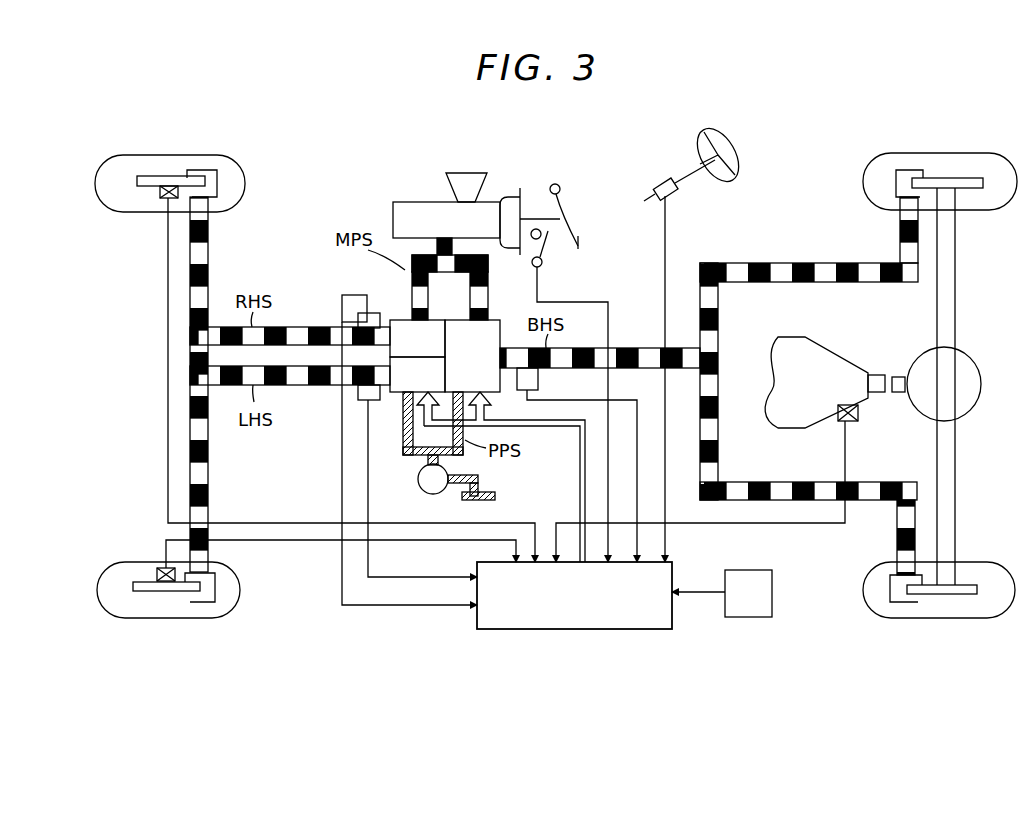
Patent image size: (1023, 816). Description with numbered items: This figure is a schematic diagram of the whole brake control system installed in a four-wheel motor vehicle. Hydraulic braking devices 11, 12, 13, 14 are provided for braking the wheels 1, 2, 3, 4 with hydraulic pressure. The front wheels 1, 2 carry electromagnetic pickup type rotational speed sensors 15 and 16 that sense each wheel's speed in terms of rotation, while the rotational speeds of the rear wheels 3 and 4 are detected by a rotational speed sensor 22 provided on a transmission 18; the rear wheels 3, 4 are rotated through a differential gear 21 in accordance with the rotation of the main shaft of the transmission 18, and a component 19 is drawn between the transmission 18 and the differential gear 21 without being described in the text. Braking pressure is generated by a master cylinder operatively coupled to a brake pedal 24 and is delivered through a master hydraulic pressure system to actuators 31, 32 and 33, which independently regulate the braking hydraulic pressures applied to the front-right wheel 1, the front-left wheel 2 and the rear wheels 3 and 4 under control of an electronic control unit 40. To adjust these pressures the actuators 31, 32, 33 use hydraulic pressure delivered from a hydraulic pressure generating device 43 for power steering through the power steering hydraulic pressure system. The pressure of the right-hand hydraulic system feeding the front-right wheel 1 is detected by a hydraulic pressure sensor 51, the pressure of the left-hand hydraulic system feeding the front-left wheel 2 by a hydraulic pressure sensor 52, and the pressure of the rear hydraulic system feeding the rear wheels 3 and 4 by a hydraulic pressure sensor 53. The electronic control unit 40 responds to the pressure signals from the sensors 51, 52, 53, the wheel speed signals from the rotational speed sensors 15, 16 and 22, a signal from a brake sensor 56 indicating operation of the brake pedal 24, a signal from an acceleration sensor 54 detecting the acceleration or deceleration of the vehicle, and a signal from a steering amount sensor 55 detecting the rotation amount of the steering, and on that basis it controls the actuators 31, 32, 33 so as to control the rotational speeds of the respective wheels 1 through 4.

The front-right wheel 1 is at (168, 155).
The front-left wheel 2 is at (97, 592).
The rear wheel 3 is at (938, 153).
The rear wheel 4 is at (936, 618).
The hydraulic braking device 11 is at (222, 185).
The hydraulic braking device 12 is at (220, 590).
The hydraulic braking device 13 is at (892, 184).
The hydraulic braking device 14 is at (886, 589).
The rotational speed sensor 15 is at (160, 192).
The rotational speed sensor 16 is at (157, 571).
The transmission 18 is at (840, 347).
The clutch 19 is at (897, 377).
The differential gear 21 is at (982, 384).
The rotational speed sensor 22 is at (860, 413).
The brake pedal 24 is at (493, 202).
The actuator 31 is at (398, 318).
The actuator 32 is at (391, 398).
The actuator 33 is at (492, 318).
The electronic control unit 40 is at (575, 630).
The hydraulic pressure generating device 43 is at (418, 482).
The hydraulic pressure sensor 51 is at (358, 318).
The hydraulic pressure sensor 52 is at (355, 393).
The hydraulic pressure sensor 53 is at (540, 381).
The acceleration sensor 54 is at (748, 617).
The steering amount sensor 55 is at (660, 181).
The brake sensor 56 is at (546, 246).